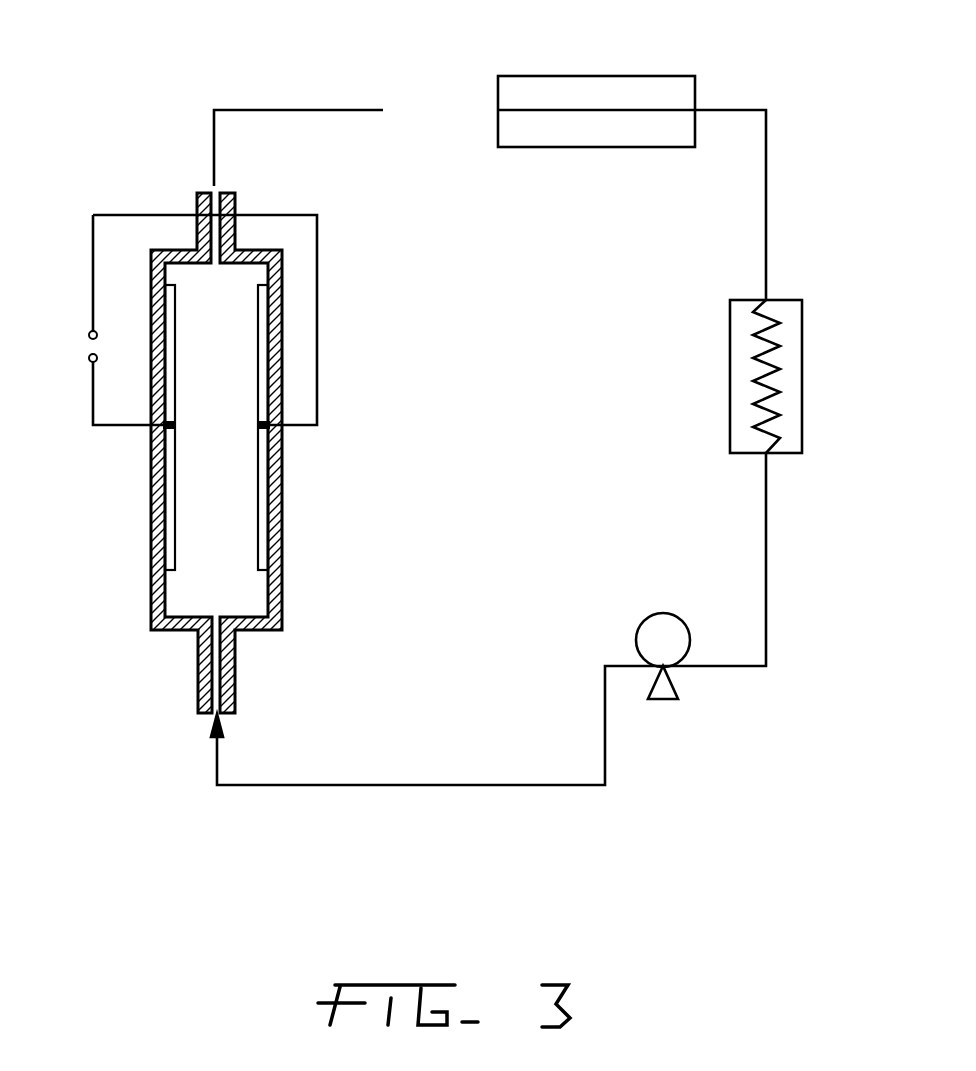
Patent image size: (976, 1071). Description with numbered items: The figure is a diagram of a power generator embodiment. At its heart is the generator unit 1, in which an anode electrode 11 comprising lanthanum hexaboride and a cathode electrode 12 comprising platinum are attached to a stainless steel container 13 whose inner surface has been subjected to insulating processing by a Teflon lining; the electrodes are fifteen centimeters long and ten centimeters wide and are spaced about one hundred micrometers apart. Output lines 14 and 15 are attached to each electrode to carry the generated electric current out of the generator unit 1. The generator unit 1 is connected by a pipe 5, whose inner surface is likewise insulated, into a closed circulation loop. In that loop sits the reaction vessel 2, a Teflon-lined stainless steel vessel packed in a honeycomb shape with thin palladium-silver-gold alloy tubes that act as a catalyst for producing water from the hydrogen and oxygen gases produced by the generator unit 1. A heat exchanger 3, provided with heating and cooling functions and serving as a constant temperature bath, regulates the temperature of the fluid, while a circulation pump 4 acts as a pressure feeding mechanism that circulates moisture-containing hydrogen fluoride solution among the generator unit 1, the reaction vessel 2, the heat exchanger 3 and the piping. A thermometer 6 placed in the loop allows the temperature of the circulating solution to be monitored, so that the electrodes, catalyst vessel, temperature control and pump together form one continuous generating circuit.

The generator unit 1 is at (222, 453).
The reaction vessel 2 is at (598, 86).
The heat exchanger 3 is at (796, 393).
The circulation pump 4 is at (663, 617).
The pipe 5 is at (383, 110).
The thermometer 6 is at (767, 565).
The anode electrode 11 is at (172, 540).
The cathode electrode 12 is at (264, 498).
The container 13 is at (283, 606).
The output line 14 is at (317, 283).
The output line 15 is at (122, 428).